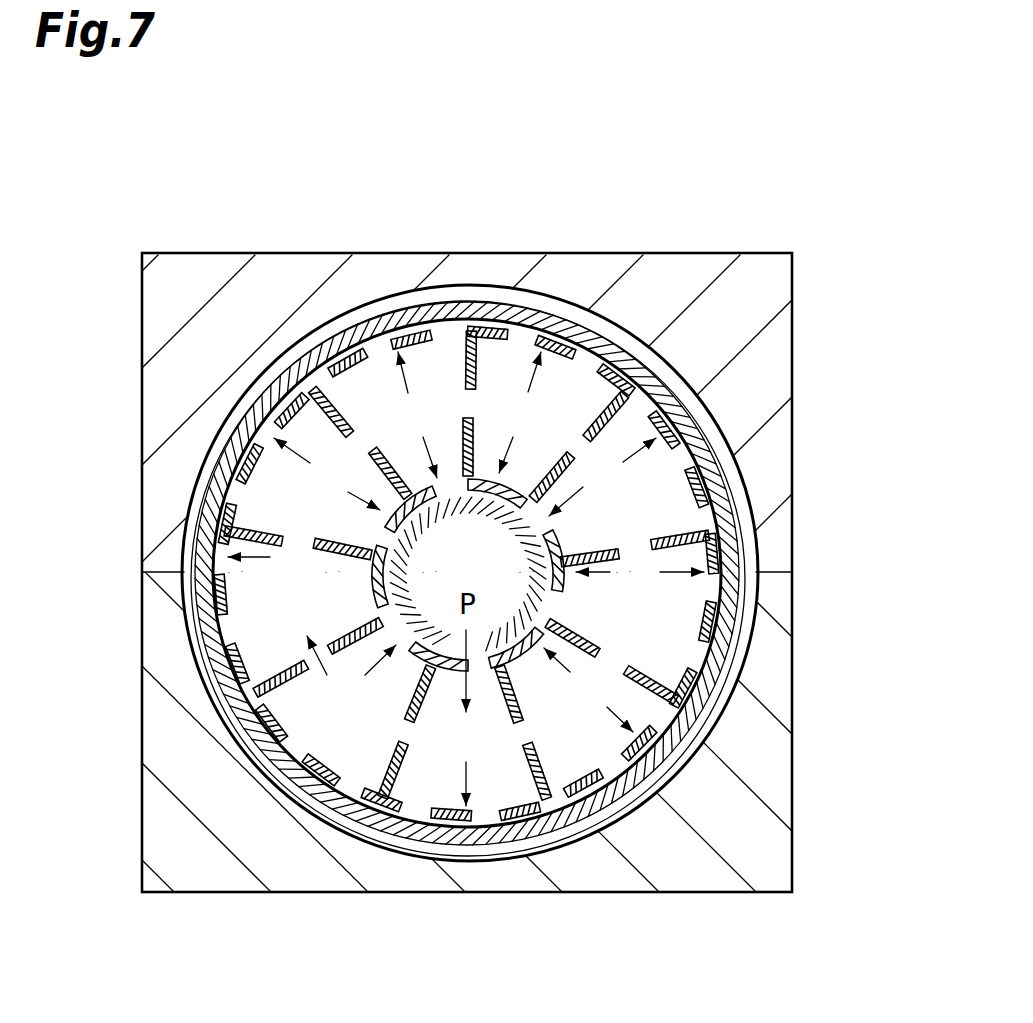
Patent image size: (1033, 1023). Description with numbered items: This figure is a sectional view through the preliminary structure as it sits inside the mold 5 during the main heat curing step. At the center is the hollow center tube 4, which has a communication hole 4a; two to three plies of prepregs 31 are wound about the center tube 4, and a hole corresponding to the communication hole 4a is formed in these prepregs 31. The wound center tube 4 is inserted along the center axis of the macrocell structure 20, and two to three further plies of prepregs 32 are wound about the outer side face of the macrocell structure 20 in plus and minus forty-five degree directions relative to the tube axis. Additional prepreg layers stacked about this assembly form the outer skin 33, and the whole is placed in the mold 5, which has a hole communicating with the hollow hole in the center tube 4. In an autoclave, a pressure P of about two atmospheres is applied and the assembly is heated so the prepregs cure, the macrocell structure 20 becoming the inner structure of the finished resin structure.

The mold 5 is at (748, 280).
The outer skin 33 is at (710, 718).
The prepregs 32 is at (552, 818).
The prepregs 31 is at (517, 650).
The macrocell structure 20 is at (440, 813).
The center tube 4 is at (417, 622).
The communication hole 4a is at (477, 645).